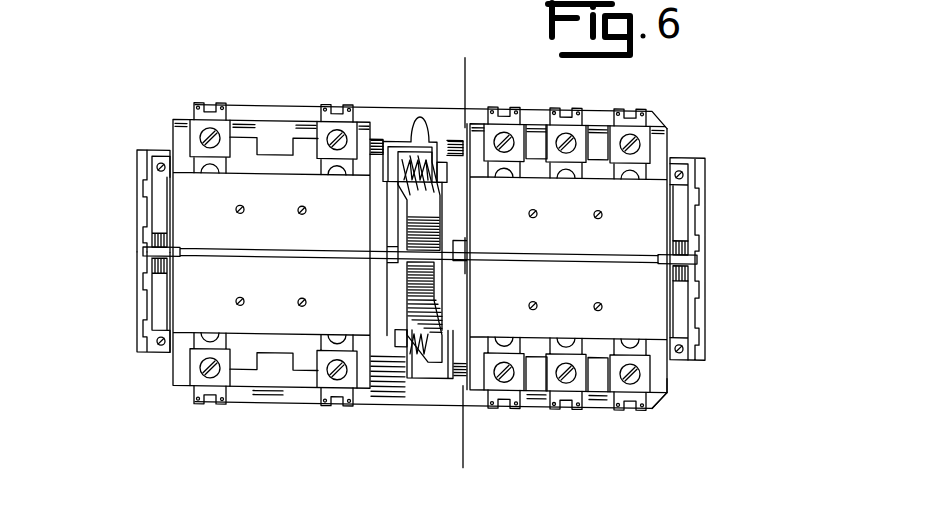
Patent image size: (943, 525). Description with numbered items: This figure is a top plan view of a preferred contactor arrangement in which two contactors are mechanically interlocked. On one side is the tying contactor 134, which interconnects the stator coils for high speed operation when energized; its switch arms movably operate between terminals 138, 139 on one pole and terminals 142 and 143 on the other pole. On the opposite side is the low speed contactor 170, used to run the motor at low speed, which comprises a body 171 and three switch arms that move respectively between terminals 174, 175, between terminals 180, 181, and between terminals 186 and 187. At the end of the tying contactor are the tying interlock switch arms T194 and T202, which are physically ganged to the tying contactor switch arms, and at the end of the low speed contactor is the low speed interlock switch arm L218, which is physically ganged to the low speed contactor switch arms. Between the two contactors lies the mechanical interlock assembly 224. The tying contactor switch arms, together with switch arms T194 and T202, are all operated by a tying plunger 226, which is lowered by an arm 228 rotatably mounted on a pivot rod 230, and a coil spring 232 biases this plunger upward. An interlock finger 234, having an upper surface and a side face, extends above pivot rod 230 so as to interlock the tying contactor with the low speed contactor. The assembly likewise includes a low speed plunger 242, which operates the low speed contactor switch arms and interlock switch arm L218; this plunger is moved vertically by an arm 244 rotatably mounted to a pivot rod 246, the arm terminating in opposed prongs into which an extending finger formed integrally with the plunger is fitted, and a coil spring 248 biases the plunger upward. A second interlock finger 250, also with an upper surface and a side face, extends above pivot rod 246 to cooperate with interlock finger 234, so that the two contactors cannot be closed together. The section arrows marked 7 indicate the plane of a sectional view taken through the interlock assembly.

The tying contactor 134 is at (92, 343).
The low speed contactor 170 is at (729, 134).
The body 171 is at (669, 374).
The terminal 138 is at (203, 138).
The terminal 142 is at (325, 140).
The terminal 174 is at (503, 134).
The terminal 180 is at (568, 133).
The terminal 186 is at (667, 125).
The terminal 139 is at (201, 379).
The terminal 143 is at (333, 377).
The terminal 175 is at (511, 384).
The terminal 181 is at (575, 374).
The terminal 187 is at (638, 374).
The switch arm T194 is at (162, 217).
The switch arm T202 is at (160, 319).
The switch arm L218 is at (680, 208).
The tying plunger 226 is at (265, 261).
The low speed plunger 242 is at (697, 250).
The arm 228 is at (397, 230).
The coil spring 232 is at (420, 172).
The pivot rod 230 is at (441, 172).
The interlock finger 234 is at (435, 228).
The interlock finger 250 is at (407, 303).
The arm 244 is at (443, 289).
The mechanical interlock assembly 224 is at (431, 390).
The pivot rod 246 is at (400, 348).
The coil spring 248 is at (424, 355).
The section line 7- 7 is at (447, 73).